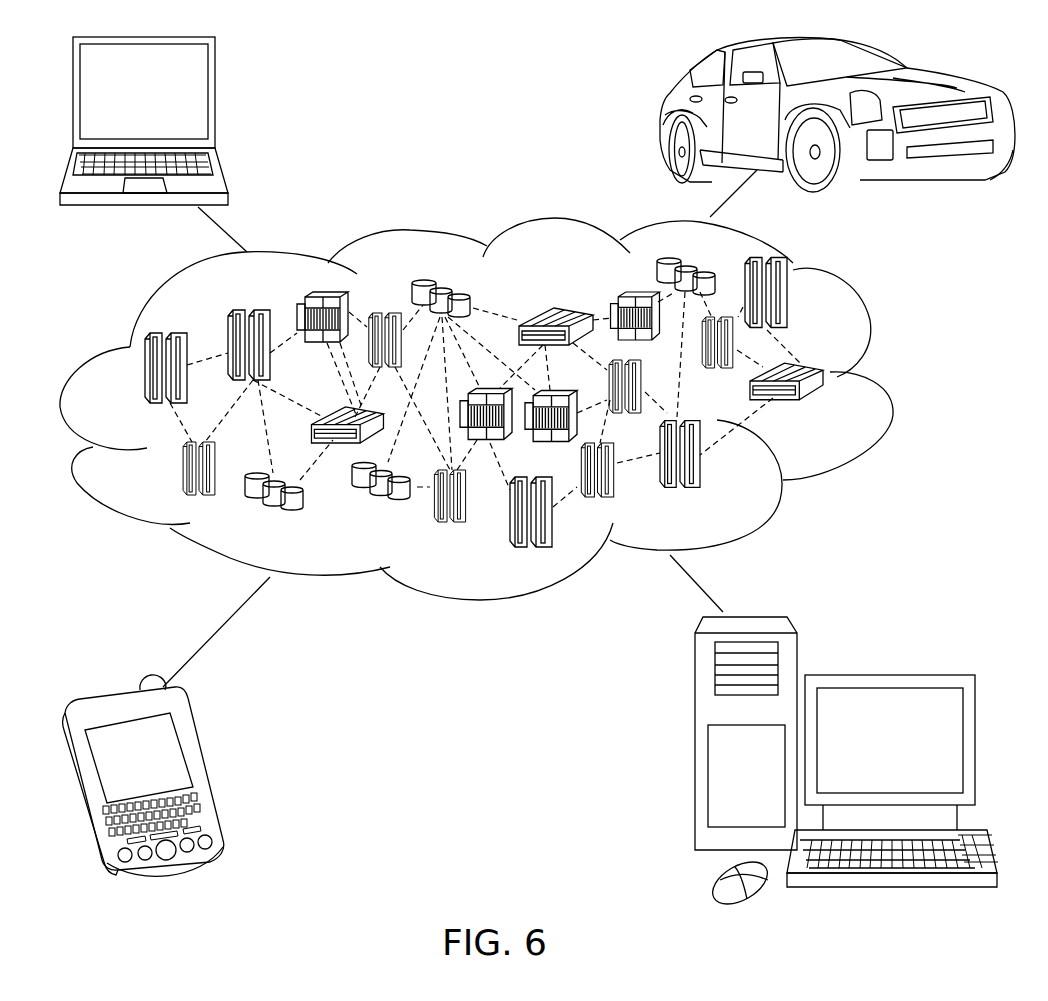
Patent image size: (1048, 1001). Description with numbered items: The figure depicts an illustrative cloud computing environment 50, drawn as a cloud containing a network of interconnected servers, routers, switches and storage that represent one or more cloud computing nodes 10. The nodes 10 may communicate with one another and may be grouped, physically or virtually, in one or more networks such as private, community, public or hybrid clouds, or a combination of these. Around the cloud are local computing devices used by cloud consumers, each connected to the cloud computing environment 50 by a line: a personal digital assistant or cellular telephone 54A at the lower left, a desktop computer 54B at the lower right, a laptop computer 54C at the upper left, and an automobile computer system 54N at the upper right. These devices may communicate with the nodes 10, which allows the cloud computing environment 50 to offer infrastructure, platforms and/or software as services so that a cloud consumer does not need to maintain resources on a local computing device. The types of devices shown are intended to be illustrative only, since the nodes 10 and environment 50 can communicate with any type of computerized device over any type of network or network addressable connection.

The cloud computing node 10 is at (832, 414).
The cloud computing environment 50 is at (887, 380).
The personal digital assistant or cellular telephone 54A is at (207, 767).
The desktop computer 54B is at (887, 675).
The laptop computer 54C is at (213, 100).
The automobile computer system 54N is at (665, 116).